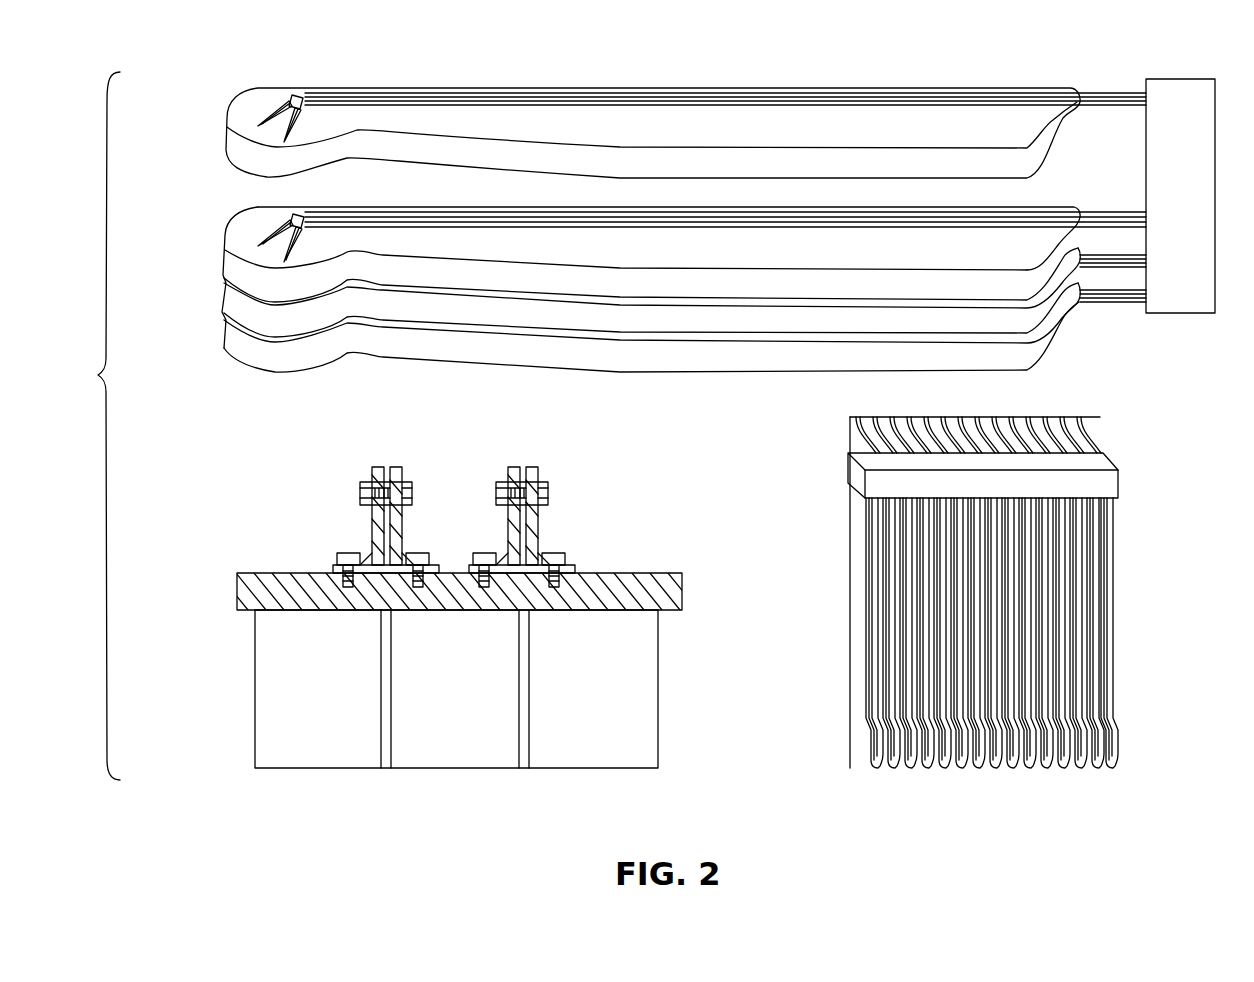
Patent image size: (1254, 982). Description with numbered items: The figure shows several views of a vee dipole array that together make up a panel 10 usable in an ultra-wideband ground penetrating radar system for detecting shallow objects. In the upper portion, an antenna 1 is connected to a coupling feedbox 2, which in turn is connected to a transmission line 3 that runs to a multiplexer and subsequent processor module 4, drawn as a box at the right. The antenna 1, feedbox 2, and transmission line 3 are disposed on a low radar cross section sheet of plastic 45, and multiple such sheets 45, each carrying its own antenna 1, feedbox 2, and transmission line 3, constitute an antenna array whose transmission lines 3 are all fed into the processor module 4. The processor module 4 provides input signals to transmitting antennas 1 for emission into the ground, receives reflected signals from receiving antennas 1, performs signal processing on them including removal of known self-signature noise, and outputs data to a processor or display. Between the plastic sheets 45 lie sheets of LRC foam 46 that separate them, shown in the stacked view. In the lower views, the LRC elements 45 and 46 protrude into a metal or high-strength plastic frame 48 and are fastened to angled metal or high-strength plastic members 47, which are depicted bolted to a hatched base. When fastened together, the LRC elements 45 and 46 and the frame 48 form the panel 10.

The antenna 1 is at (270, 113).
The coupling feedbox 2 is at (330, 88).
The transmission line 3 is at (518, 88).
The multiplexer and subsequent processor module 4 is at (1190, 313).
The panel 10 is at (1019, 592).
The low radar cross section sheet of plastic 45 is at (243, 224).
The sheet of LRC foam 46 is at (322, 359).
The angled member 47 is at (557, 525).
The frame 48 is at (858, 477).